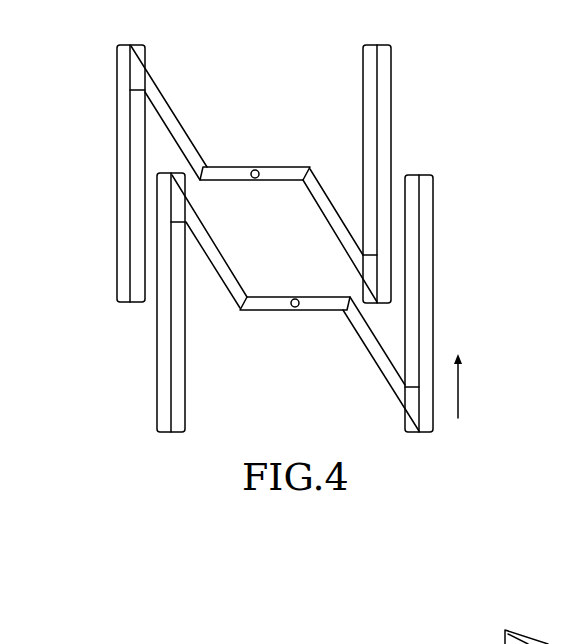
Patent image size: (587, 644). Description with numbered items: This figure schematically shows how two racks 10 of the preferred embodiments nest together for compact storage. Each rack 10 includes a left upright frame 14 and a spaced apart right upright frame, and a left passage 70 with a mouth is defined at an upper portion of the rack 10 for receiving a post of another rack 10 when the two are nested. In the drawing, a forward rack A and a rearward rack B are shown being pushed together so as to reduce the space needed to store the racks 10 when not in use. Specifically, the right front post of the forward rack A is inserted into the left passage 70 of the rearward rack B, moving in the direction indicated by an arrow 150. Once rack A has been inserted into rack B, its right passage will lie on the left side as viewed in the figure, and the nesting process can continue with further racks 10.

The rack 10 is at (113, 195).
The left upright frame 14 is at (115, 73).
The left passage 70 is at (176, 167).
The forward rack A is at (440, 197).
The rearward rack B is at (403, 63).
The arrow 150 is at (460, 375).